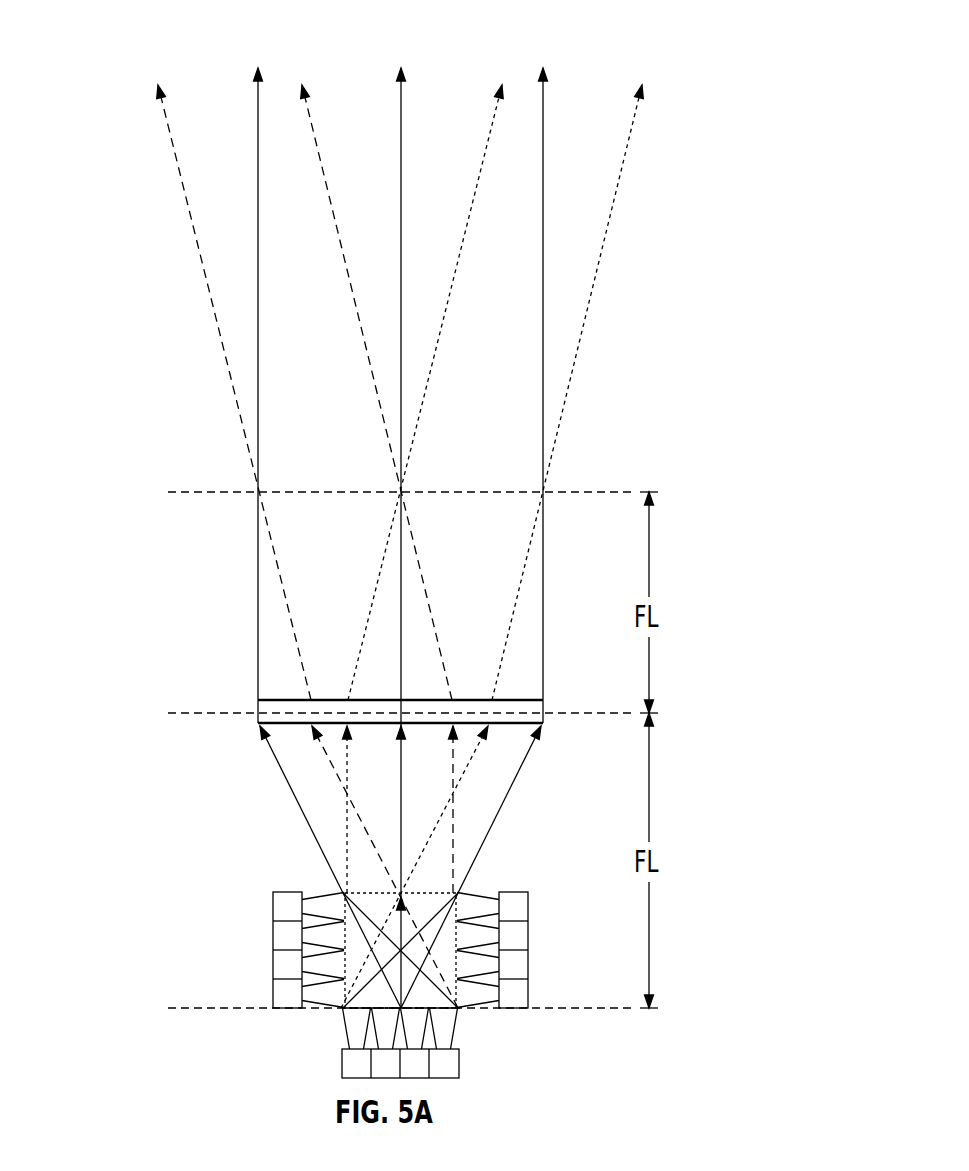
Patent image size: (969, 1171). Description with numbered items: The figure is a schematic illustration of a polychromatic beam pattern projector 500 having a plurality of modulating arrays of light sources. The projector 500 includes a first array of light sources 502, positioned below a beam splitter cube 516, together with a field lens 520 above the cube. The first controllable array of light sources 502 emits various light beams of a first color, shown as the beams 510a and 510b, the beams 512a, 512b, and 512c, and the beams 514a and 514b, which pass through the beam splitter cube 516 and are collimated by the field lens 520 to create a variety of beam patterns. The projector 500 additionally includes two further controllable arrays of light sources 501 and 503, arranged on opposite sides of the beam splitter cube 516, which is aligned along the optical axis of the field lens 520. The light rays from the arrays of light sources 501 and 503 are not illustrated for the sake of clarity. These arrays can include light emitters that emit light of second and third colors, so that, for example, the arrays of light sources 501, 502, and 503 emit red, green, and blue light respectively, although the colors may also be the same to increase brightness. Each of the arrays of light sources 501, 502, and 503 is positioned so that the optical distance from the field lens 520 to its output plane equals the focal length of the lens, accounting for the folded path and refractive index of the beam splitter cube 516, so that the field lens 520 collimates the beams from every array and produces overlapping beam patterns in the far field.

The polychromatic beam pattern projector 500 is at (122, 43).
The controllable array of light sources 501 is at (262, 950).
The first array of light sources 502 is at (333, 1043).
The controllable array of light sources 503 is at (535, 951).
The light beam 510a is at (347, 775).
The light beam 510b is at (465, 773).
The light beam 512a is at (258, 585).
The light beam 512b is at (401, 598).
The light beam 512c is at (543, 572).
The light beam 514a is at (188, 212).
The light beam 514b is at (365, 350).
The beam splitter cube 516 is at (455, 1010).
The field lens 520 is at (375, 712).